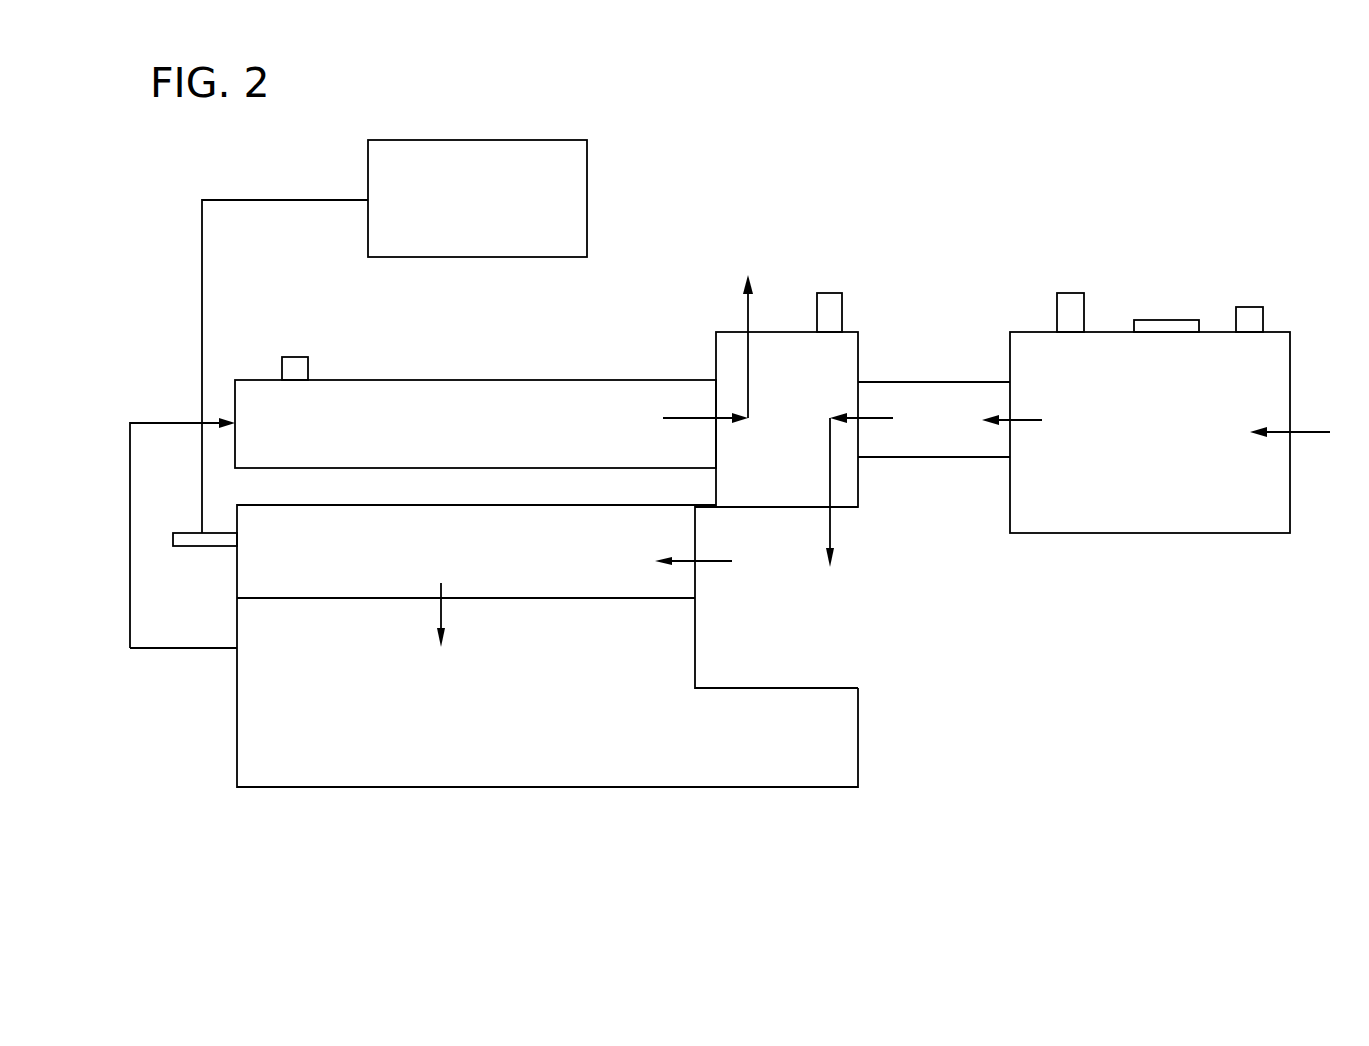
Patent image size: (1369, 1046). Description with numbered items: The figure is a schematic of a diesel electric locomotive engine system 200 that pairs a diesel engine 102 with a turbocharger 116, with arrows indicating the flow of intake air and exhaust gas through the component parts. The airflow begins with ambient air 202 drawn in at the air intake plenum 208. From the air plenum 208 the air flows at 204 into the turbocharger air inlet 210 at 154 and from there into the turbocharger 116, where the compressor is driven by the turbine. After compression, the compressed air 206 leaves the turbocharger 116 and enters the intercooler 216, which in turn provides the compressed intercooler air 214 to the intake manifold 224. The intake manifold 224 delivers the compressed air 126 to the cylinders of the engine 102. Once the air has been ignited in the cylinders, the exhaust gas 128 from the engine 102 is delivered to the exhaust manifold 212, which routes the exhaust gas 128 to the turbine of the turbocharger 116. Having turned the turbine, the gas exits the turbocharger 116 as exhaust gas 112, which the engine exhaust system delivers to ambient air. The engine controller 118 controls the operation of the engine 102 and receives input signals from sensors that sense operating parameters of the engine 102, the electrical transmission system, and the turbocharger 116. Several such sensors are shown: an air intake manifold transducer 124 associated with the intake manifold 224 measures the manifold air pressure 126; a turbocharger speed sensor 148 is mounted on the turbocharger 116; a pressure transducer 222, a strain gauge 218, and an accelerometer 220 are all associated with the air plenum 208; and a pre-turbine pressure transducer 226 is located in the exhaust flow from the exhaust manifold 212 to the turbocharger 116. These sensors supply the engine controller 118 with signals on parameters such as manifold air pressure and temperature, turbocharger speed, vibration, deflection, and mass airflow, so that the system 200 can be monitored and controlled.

The locomotive engine system 200 is at (683, 115).
The diesel engine 102 is at (570, 787).
The exhaust gas 112 is at (752, 315).
The turbocharger 116 is at (858, 347).
The engine controller 118 is at (587, 205).
The air intake manifold transducer 124 is at (210, 548).
The compressed air 126 is at (444, 592).
The exhaust gas 128 is at (130, 628).
The turbocharger speed sensor 148 is at (842, 305).
The air flow into turbo air inlet 154 is at (877, 418).
The ambient air 202 is at (1298, 432).
The air flow from air plenum 204 is at (1024, 420).
The compressed air 206 is at (833, 525).
The air intake plenum 208 is at (1158, 536).
The turbocharger air inlet 210 is at (935, 460).
The exhaust manifold 212 is at (508, 380).
The intercooler air 214 is at (721, 539).
The intercooler 216 is at (860, 605).
The strain gauge 218 is at (1245, 307).
The accelerometer 220 is at (1160, 320).
The pressure transducer 222 is at (1068, 293).
The intake manifold 224 is at (455, 505).
The pre-turbine pressure transducer 226 is at (292, 357).